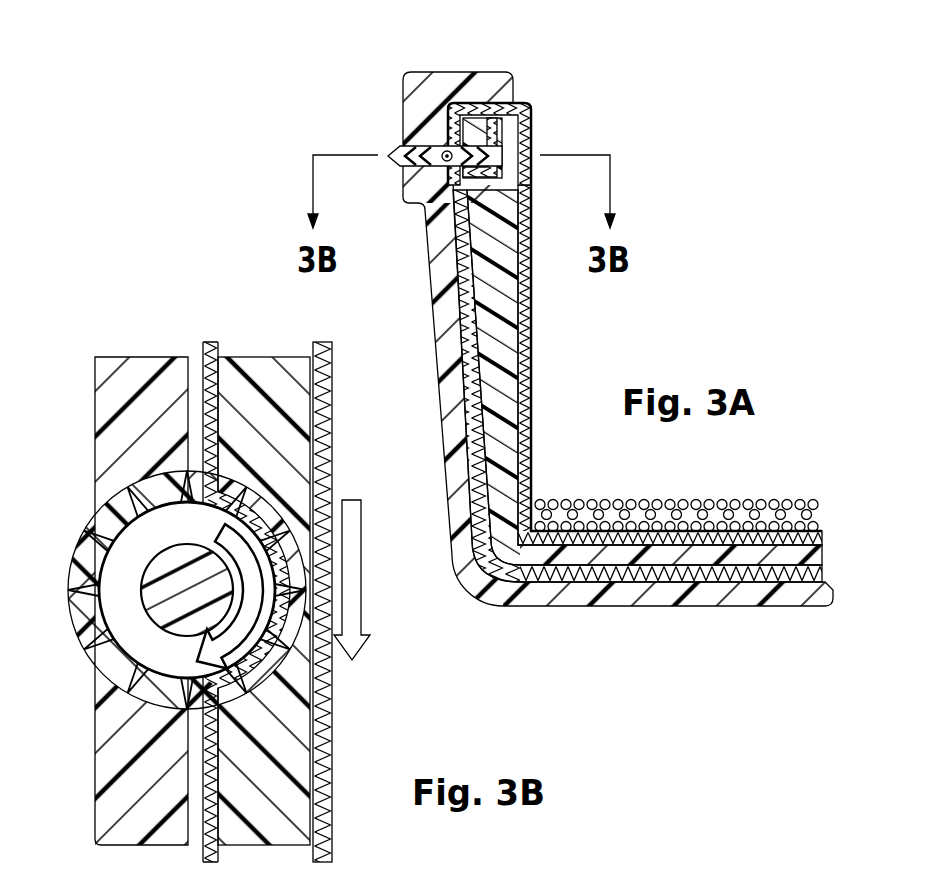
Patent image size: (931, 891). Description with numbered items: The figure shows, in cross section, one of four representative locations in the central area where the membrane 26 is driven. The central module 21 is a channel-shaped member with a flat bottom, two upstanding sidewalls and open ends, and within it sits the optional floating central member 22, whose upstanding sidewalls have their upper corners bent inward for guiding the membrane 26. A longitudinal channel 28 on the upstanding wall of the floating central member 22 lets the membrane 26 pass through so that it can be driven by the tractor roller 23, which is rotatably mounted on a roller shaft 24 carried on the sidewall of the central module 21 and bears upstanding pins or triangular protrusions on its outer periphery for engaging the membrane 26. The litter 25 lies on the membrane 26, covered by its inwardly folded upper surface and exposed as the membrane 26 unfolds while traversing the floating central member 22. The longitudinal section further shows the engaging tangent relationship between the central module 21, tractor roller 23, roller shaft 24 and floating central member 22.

In FIG. 3A, the central module 21 is at (425, 72).
In FIG. 3B, the central module 21 is at (112, 402).
In FIG. 3A, the floating central member 22 is at (522, 103).
In FIG. 3A, the tractor roller 23 is at (400, 152).
In FIG. 3B, the tractor roller 23 is at (95, 592).
In FIG. 3B, the roller shaft 24 is at (103, 580).
In FIG. 3A, the litter 25 is at (695, 500).
In FIG. 3A, the membrane 26 is at (533, 360).
In FIG. 3B, the membrane 26 is at (200, 352).
In FIG. 3A, the longitudinal channel 28 is at (512, 150).